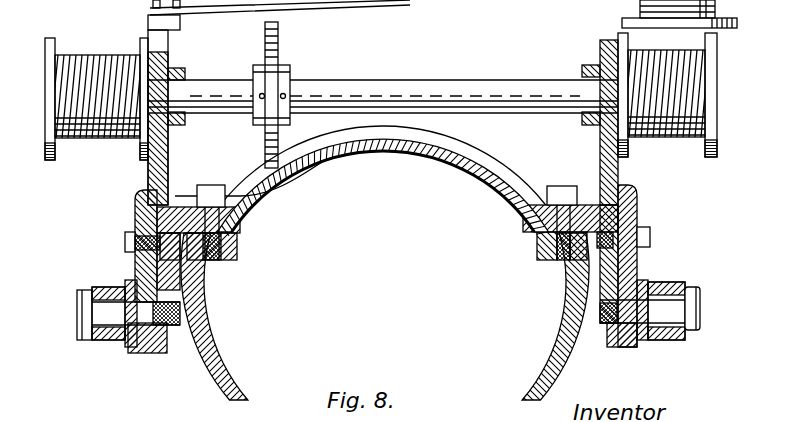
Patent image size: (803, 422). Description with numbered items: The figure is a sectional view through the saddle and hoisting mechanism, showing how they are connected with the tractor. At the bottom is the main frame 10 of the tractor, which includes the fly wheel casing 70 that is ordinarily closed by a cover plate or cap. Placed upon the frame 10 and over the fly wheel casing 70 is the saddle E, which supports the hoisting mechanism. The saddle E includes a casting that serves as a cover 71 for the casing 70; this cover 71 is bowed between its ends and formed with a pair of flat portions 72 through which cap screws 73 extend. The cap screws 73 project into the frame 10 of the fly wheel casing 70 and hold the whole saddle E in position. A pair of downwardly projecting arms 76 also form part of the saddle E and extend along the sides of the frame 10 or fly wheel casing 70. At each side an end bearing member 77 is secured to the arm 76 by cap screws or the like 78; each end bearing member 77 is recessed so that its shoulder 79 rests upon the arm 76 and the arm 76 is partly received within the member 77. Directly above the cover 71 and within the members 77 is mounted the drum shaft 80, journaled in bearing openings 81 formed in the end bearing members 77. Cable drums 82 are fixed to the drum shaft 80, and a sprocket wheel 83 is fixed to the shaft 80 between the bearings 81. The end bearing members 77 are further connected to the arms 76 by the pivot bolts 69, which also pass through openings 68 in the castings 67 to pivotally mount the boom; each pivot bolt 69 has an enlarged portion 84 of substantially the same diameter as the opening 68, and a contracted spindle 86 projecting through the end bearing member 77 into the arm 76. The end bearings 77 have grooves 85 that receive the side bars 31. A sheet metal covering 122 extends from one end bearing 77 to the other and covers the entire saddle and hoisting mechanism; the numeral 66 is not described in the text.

The main frame 10 is at (214, 362).
The side bars 31 is at (130, 353).
The member 66 is at (495, 6).
The castings 67 is at (130, 288).
The openings 68 is at (110, 342).
The pivot bolts 69 is at (84, 342).
The fly wheel casing 70 is at (568, 330).
The cover 71 is at (482, 168).
The flat portions 72 is at (198, 215).
The cap screws 73 is at (559, 186).
The downwardly projecting arms 76 is at (588, 300).
The end bearing members 77 is at (135, 211).
The cap screws 78 is at (125, 244).
The shoulder 79 is at (620, 190).
The drum shaft 80 is at (466, 108).
The bearing openings 81 is at (188, 80).
The cable drums 82 is at (96, 62).
The sprocket wheel 83 is at (279, 48).
The enlarged portion 84 is at (670, 322).
The grooves 85 is at (640, 342).
The contracted spindles 86 is at (613, 347).
The sheet metal covering 122 is at (340, 0).
The saddle E is at (350, 155).